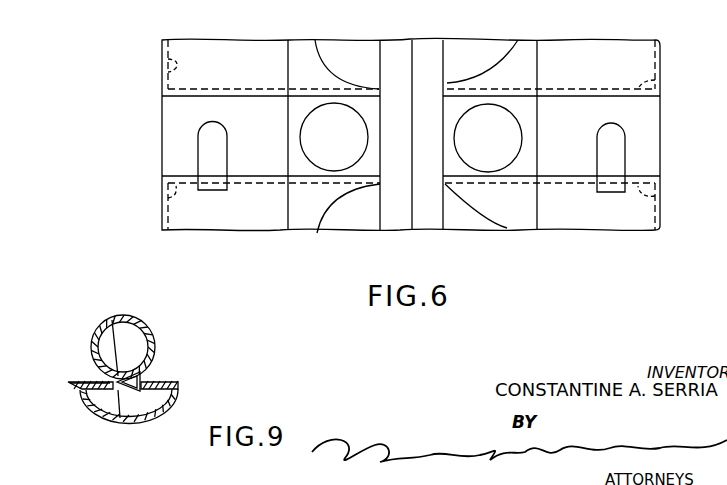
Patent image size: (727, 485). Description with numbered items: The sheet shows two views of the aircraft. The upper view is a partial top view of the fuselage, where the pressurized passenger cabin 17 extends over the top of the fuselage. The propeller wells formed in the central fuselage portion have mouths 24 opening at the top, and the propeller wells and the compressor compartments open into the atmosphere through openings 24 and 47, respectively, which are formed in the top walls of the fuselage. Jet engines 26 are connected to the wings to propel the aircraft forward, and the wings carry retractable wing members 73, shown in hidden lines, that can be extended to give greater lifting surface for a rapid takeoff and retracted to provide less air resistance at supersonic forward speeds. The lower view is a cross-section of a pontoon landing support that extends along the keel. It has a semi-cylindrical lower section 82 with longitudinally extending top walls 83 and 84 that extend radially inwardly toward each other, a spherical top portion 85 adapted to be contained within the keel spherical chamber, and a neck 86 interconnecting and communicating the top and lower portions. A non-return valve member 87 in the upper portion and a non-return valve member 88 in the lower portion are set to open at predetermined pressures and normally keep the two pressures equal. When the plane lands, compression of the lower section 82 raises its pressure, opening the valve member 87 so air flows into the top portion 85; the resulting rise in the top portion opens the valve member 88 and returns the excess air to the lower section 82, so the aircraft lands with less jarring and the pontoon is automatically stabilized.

In FIG. 6, the pressurized passenger cabin 17 is at (397, 53).
In FIG. 6, the mouths of propeller wells 24 is at (492, 51).
In FIG. 6, the jet engines 26 is at (200, 150).
In FIG. 6, the compressor compartment openings 47 is at (503, 118).
In FIG. 6, the retractable wing members 73 is at (162, 55).
In FIG. 9, the semi-cylindrical lower section 82 is at (140, 422).
In FIG. 9, the top wall 83 is at (85, 385).
In FIG. 9, the top wall 84 is at (178, 385).
In FIG. 9, the spherical top portion 85 is at (145, 325).
In FIG. 9, the neck 86 is at (145, 375).
In FIG. 9, the non-return valve member 87 is at (112, 320).
In FIG. 9, the non-return valve member 88 is at (118, 418).